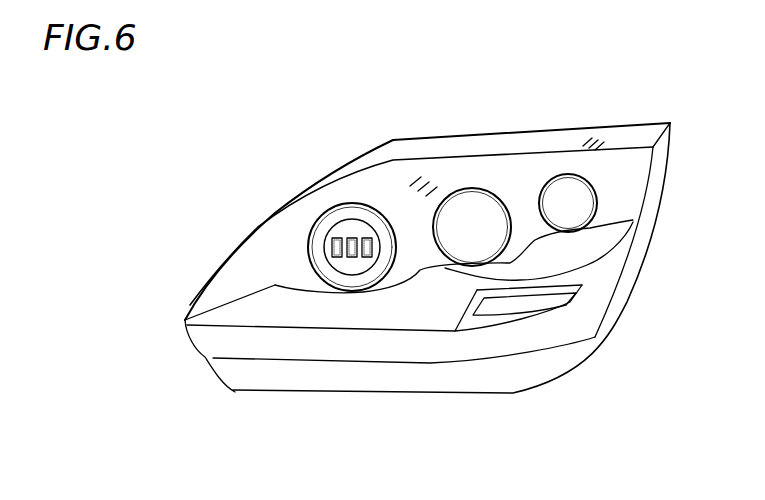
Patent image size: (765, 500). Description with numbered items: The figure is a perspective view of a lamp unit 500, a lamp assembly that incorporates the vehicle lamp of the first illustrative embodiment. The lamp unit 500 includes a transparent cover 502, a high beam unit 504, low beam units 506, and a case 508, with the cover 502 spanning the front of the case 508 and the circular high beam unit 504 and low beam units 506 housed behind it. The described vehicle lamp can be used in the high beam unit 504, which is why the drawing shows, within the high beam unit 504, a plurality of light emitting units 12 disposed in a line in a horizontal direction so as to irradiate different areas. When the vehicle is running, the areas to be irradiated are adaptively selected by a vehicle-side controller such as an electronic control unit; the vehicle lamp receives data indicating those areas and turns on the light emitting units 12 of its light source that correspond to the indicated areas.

The lamp unit 500 is at (441, 490).
The transparent cover 502 is at (262, 259).
The high beam unit 504 is at (355, 215).
The low beam units 506 is at (567, 197).
The case 508 is at (635, 250).
The light emitting units 12 is at (367, 258).